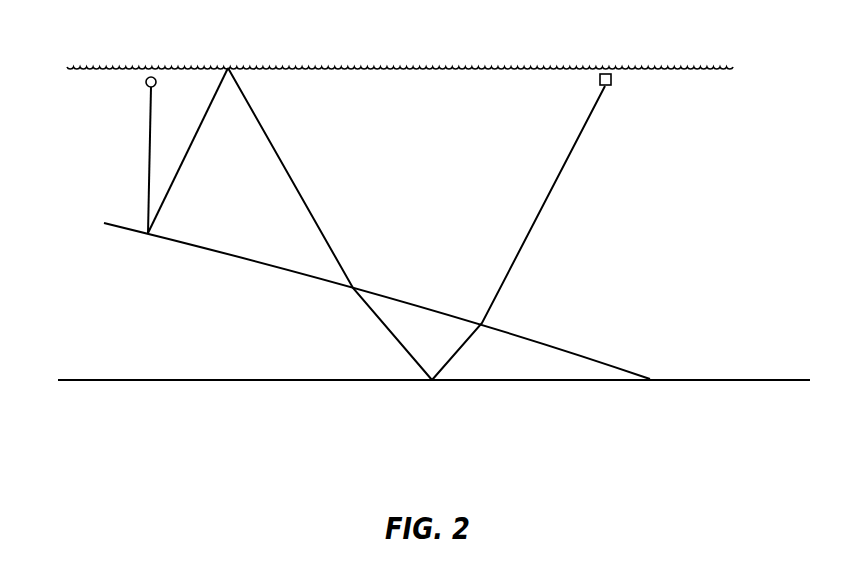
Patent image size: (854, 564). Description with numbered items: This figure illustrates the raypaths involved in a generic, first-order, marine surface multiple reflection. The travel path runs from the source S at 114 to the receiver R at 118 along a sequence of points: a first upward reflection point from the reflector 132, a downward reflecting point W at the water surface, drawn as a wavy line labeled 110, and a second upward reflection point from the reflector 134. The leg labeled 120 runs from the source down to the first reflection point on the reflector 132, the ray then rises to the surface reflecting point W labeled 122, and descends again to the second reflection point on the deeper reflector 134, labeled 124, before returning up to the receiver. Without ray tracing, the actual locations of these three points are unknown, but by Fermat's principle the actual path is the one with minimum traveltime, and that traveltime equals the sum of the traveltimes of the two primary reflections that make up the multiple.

The water surface 110 is at (733, 69).
The source 114 is at (146, 88).
The receiver 118 is at (611, 86).
The direct ray path from source to reflection point P1 120 is at (142, 240).
The water surface reflection point Wk 122 is at (227, 67).
The reflection point P2 124 is at (427, 386).
The reflector 132 is at (540, 342).
The reflector 134 is at (528, 382).